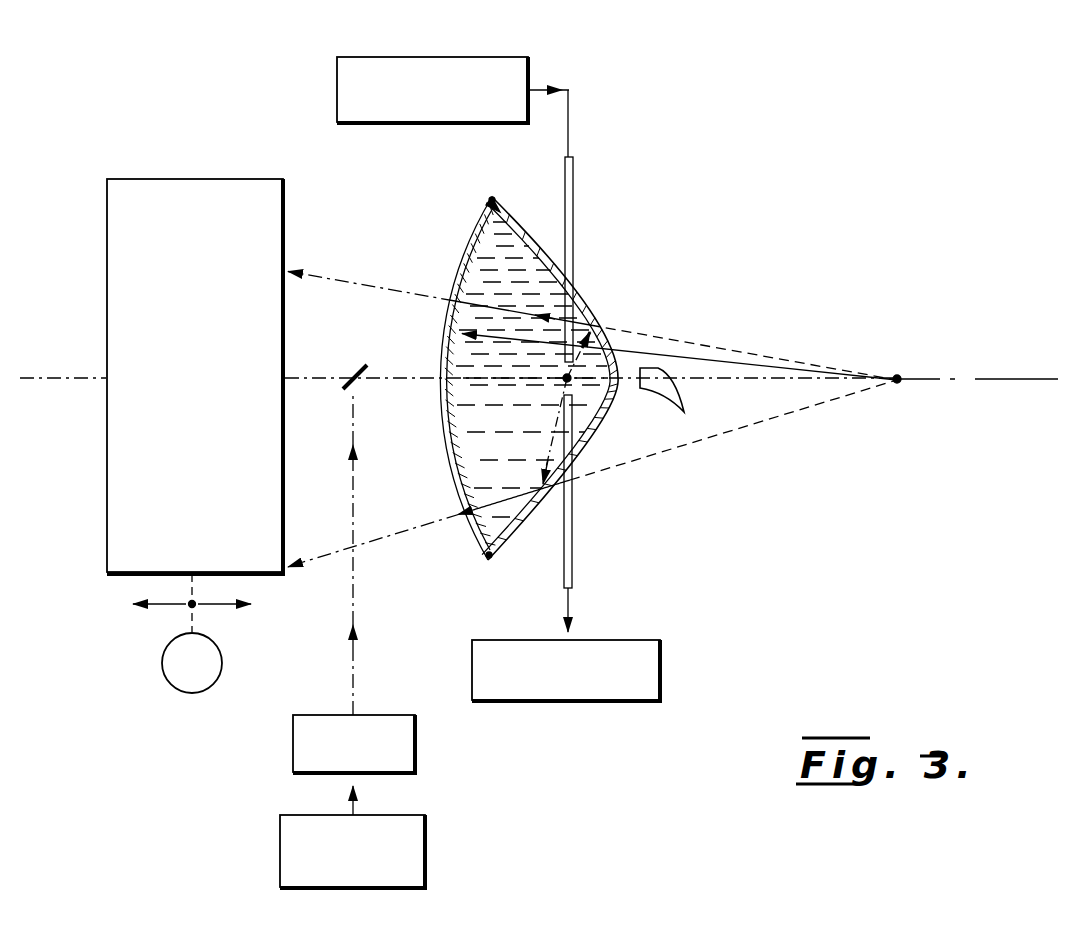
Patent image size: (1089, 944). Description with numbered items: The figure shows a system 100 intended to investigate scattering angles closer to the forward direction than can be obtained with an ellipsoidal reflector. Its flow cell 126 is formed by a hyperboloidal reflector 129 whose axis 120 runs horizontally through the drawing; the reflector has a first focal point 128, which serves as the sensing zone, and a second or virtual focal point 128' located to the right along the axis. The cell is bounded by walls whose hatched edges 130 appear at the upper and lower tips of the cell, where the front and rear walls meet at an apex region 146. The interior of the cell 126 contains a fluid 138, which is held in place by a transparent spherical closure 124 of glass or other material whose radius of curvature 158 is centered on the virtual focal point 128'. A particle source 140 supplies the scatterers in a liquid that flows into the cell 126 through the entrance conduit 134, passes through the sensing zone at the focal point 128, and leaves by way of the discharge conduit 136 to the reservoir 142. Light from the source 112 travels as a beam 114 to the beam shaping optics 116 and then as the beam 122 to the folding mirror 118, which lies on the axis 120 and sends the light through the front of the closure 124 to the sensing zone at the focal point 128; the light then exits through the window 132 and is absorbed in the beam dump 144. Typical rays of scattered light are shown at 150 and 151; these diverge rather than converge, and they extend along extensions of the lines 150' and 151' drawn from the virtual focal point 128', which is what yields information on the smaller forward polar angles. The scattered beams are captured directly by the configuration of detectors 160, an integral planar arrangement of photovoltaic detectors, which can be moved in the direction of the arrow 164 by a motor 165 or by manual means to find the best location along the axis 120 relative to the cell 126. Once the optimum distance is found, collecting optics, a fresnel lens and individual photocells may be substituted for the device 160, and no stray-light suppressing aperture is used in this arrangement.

The system 100 is at (298, 136).
The light source 112 is at (426, 862).
The beam 114 is at (356, 805).
The beam shaping optics 116 is at (370, 715).
The folding mirror 118 is at (356, 363).
The axis 120 is at (286, 378).
The beam 122 is at (356, 498).
The spherical closure 124 is at (450, 440).
The flow cell 126 is at (618, 308).
The first focal point 128 is at (612, 399).
The virtual focal point 128' is at (927, 360).
The hyperboloidal reflector 129 is at (598, 306).
The lens edges 130 is at (486, 201).
The window 132 is at (620, 360).
The entrance conduit 134 is at (574, 192).
The discharge conduit 136 is at (573, 540).
The fluid 138 is at (515, 462).
The particle source 140 is at (530, 70).
The reservoir 142 is at (606, 640).
The beam dump 144 is at (685, 396).
The lens apex 146 is at (528, 242).
The scattered light ray 150 is at (439, 286).
The line from virtual focal point 150' is at (743, 352).
The scattered light ray 151 is at (429, 527).
The line from virtual focal point 151' is at (733, 430).
The radius of curvature 158 is at (716, 360).
The configuration of detectors 160 is at (107, 222).
The arrow 164 is at (170, 608).
The motor 165 is at (170, 680).